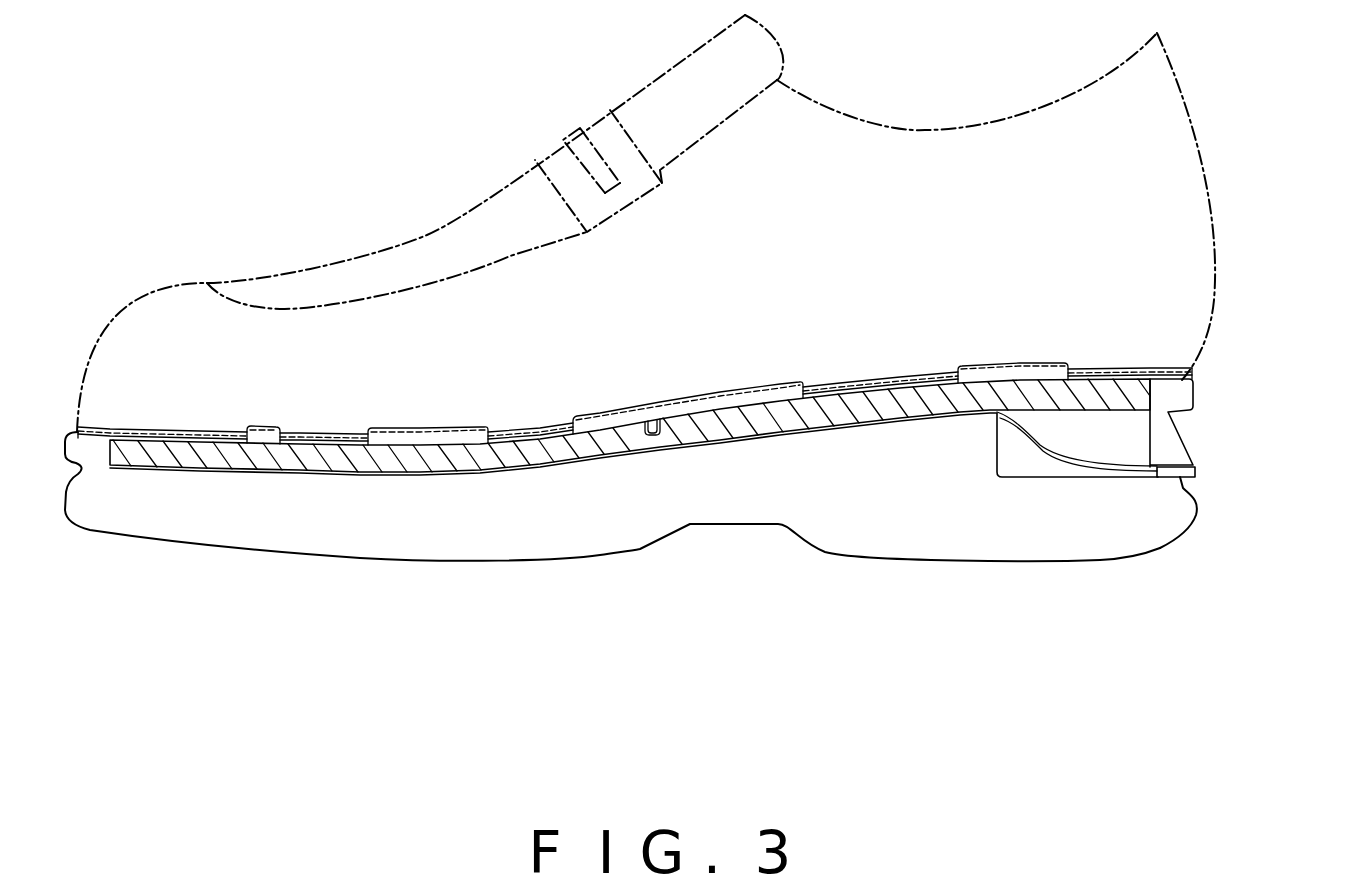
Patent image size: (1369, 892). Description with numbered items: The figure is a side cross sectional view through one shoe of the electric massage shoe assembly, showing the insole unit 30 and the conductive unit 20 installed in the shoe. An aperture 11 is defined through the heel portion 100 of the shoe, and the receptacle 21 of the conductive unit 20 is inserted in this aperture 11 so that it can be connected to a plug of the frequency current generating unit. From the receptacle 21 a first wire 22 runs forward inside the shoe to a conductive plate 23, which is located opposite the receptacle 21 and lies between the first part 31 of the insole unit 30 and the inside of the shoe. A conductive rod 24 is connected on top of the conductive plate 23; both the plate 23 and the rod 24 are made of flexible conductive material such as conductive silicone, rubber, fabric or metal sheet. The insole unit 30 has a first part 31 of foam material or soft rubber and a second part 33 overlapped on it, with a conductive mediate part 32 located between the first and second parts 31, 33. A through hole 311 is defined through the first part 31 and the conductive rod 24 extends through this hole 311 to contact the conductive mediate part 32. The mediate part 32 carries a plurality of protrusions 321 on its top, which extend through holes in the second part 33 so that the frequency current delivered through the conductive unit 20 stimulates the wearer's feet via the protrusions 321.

The heel portion 100 is at (1155, 530).
The aperture 11 is at (1198, 507).
The conductive unit 20 is at (1068, 446).
The receptacle 21 is at (1195, 472).
The first wire 22 is at (1043, 445).
The conductive plate 23 is at (609, 432).
The conductive rod 24 is at (650, 430).
The insole unit 30 is at (528, 415).
The first part 31 is at (1124, 387).
The through hole 311 is at (657, 437).
The conductive mediate part 32 is at (893, 380).
The protrusions 321 is at (970, 362).
The second part 33 is at (837, 382).